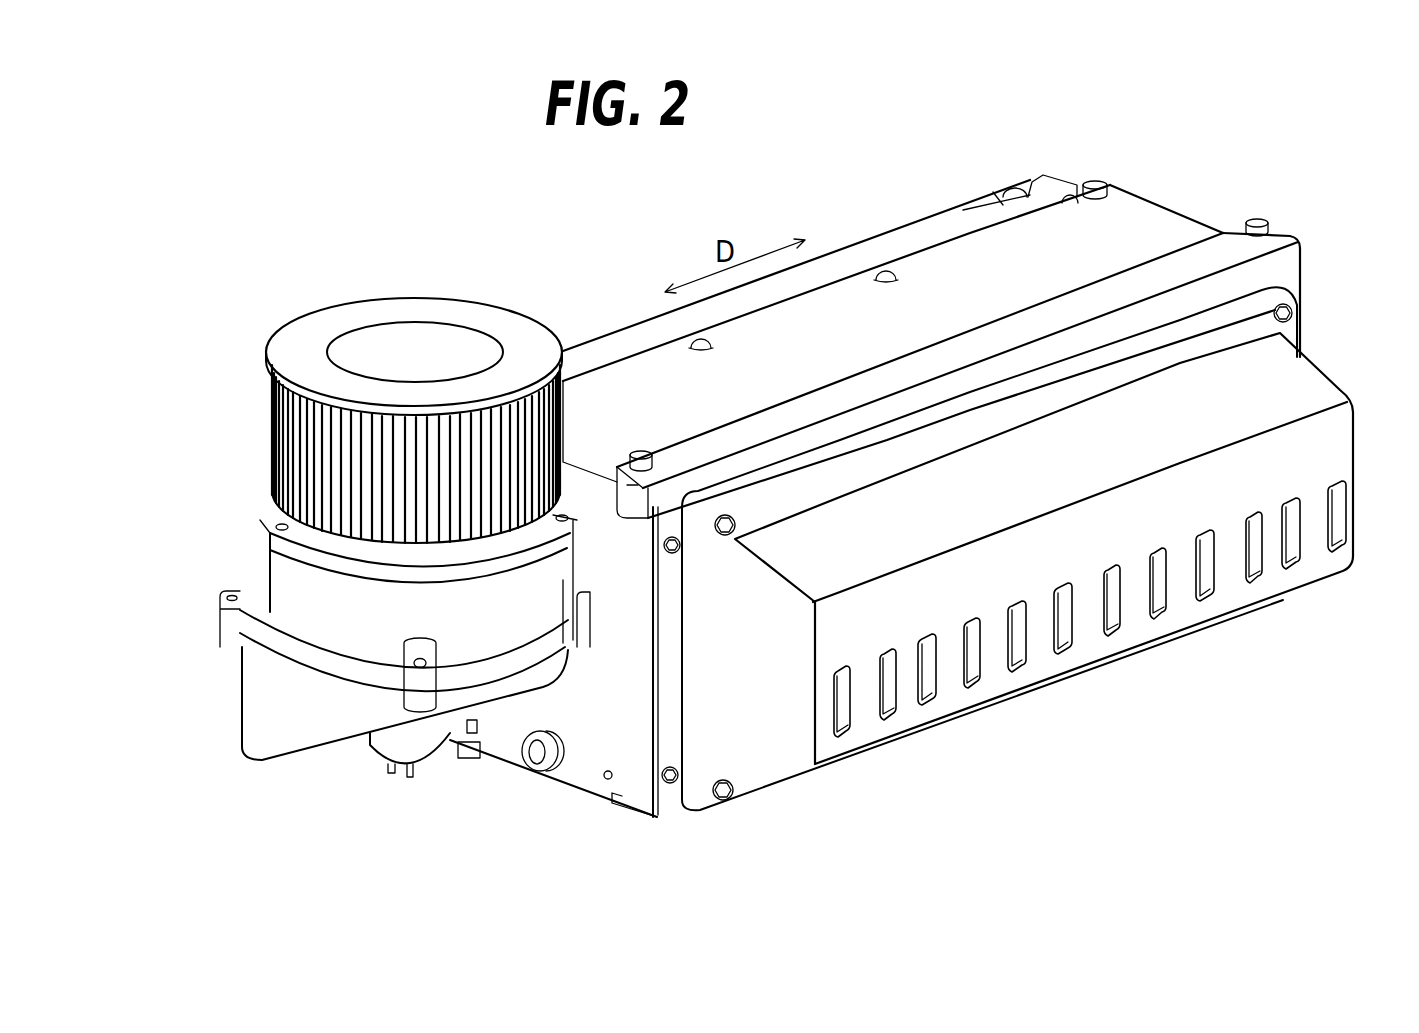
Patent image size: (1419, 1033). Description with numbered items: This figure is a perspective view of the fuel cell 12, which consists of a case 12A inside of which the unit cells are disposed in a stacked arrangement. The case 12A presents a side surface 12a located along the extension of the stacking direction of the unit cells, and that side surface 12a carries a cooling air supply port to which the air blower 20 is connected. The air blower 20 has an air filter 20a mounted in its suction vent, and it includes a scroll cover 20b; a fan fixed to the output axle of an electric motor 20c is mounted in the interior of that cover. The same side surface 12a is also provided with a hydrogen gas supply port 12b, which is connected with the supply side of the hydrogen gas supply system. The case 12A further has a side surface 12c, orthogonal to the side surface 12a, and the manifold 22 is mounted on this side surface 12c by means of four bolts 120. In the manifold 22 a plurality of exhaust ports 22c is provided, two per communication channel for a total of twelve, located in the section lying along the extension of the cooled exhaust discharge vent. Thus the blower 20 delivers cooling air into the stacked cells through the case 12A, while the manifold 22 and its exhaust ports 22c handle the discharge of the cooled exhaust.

The fuel cell 12 is at (906, 192).
The case 12A is at (1129, 207).
The side surface 12a is at (577, 814).
The hydrogen gas supply port 12b is at (558, 758).
The side surface 12c is at (765, 814).
The bolts 120 is at (725, 797).
The air blower 20 is at (230, 721).
The air filter 20a is at (299, 341).
The scroll cover 20b is at (290, 593).
The electric motor 20c is at (432, 748).
The manifold 22 is at (1065, 584).
The exhaust ports 22c is at (882, 718).